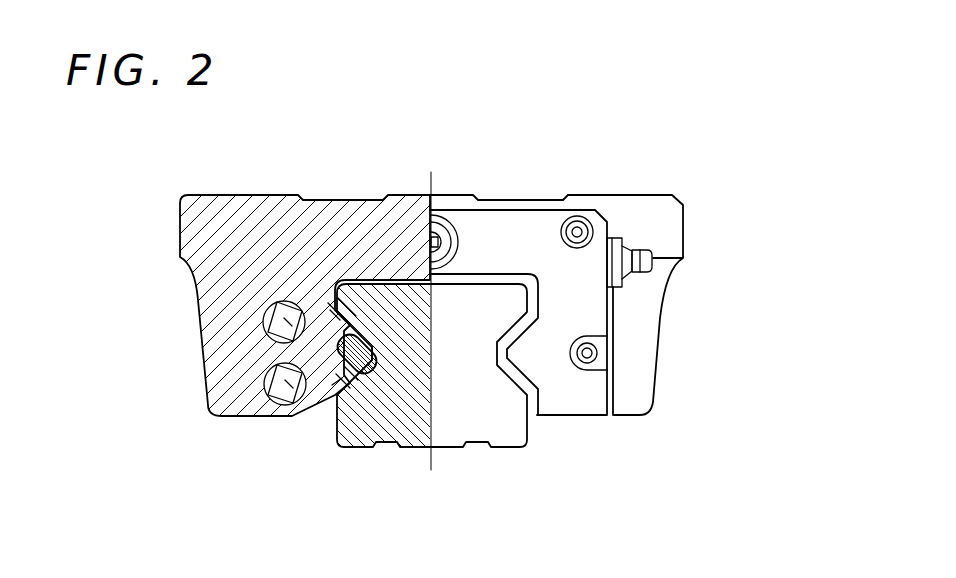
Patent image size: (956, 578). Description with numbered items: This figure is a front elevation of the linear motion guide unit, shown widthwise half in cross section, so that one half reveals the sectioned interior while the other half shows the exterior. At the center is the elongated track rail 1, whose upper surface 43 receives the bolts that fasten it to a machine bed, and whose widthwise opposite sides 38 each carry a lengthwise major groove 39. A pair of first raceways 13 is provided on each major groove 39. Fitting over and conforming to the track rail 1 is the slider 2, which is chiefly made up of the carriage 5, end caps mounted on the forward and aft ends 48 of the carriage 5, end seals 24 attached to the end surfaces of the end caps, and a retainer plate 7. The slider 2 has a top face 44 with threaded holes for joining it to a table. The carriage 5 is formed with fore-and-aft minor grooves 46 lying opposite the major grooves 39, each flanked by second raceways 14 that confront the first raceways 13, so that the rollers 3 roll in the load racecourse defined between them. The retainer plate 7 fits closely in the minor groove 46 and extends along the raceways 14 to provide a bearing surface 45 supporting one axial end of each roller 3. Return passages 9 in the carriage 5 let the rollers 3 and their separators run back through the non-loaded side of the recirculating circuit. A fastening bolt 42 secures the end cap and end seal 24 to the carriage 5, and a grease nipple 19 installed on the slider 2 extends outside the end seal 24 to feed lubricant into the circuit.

The track rail 1 is at (460, 397).
The slider 2 is at (622, 186).
The roller 3 is at (336, 318).
The carriage 5 is at (363, 195).
The retainer plate 7 is at (370, 380).
The return passage 9 is at (273, 317).
The first raceway 13 is at (360, 340).
The second raceway 14 is at (276, 352).
The grease nipple 19 is at (648, 264).
The end seal 24 is at (567, 398).
The widthwise opposite side 38 is at (348, 385).
The major groove 39 is at (425, 318).
The fastening bolt 42 is at (577, 230).
The upper surface 43 is at (487, 287).
The top face 44 is at (653, 194).
The bearing surface 45 is at (333, 313).
The minor groove 46 is at (362, 395).
The forward and aft end 48 is at (256, 220).